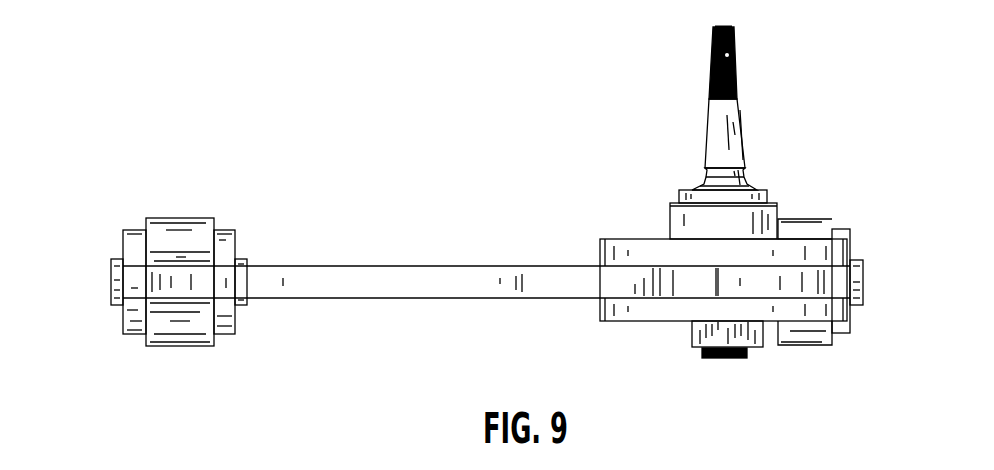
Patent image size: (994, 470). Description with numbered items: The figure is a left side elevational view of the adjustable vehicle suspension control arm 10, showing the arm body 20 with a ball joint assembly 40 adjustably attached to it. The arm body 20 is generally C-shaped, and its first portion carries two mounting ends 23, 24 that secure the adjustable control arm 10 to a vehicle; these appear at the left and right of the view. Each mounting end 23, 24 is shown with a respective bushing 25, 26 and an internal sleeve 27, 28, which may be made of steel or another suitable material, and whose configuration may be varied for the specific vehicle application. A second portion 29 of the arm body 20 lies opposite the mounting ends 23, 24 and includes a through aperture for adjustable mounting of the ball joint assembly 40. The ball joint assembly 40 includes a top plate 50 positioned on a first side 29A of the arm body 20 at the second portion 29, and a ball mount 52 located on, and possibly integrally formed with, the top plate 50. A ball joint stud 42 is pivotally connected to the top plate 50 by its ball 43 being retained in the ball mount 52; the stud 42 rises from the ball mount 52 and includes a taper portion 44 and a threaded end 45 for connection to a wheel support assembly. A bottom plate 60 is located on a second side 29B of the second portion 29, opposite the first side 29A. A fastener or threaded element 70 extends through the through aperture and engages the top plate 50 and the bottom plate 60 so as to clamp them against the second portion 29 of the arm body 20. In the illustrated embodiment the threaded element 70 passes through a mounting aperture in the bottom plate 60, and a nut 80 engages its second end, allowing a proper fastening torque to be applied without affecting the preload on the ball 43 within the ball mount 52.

The adjustable vehicle suspension control arm 10 is at (476, 118).
The arm body 20 is at (449, 258).
The mounting end 23 is at (185, 218).
The mounting end 24 is at (800, 220).
The bushing 25 is at (127, 230).
The bushing 26 is at (851, 229).
The internal sleeve 27 is at (110, 276).
The internal sleeve 28 is at (864, 277).
The second portion 29 is at (388, 284).
The first side 29A is at (362, 265).
The second side 29B is at (336, 300).
The ball joint assembly 40 is at (755, 182).
The ball joint stud 42 is at (738, 100).
The ball 43 is at (695, 186).
The taper portion 44 is at (734, 135).
The threaded end 45 is at (709, 60).
The top plate 50 is at (610, 239).
The ball mount 52 is at (670, 205).
The bottom plate 60 is at (636, 321).
The threaded element 70 is at (723, 359).
The nut 80 is at (752, 348).